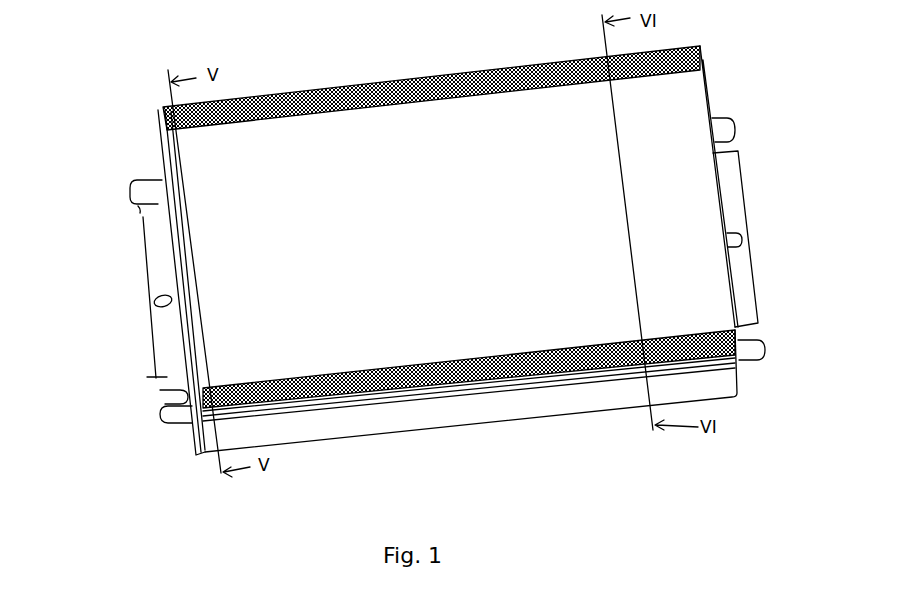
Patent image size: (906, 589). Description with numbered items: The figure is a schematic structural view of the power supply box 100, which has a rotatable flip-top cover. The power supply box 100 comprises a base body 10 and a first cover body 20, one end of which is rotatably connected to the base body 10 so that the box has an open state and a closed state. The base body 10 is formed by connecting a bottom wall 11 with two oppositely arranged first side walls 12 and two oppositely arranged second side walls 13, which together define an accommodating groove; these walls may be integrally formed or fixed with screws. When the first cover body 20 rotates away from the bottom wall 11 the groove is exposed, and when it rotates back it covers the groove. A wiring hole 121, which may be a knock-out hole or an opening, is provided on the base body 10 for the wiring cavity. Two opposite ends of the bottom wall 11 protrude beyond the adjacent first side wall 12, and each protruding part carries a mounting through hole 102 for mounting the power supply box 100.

The power supply box 100 is at (427, 30).
The base body 10 is at (80, 408).
The bottom wall 11 is at (167, 374).
The first side wall 12 is at (200, 403).
The second side wall 13 is at (213, 455).
The wiring hole 121 is at (162, 185).
The mounting through hole 102 is at (142, 219).
The first cover body 20 is at (707, 222).